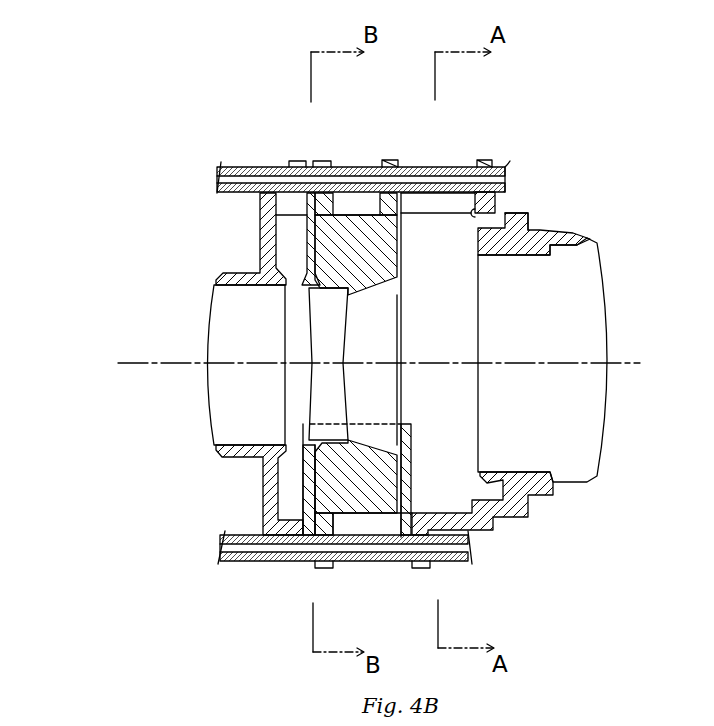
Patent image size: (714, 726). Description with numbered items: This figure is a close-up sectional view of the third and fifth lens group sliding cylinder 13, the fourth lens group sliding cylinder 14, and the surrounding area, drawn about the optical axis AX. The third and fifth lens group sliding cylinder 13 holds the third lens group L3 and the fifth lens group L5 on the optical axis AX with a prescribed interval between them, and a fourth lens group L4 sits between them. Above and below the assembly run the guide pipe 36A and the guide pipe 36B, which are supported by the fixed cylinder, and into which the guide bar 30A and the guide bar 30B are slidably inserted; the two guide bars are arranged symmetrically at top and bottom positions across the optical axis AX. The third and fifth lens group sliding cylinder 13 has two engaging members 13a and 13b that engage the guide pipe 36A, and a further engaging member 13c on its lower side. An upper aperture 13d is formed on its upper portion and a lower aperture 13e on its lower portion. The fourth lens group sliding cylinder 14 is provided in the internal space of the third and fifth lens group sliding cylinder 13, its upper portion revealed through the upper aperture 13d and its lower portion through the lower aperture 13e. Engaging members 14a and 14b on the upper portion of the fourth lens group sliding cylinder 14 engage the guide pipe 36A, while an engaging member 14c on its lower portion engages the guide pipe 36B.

The third and fifth lens group sliding cylinder 13 is at (539, 225).
The engaging member 13a is at (292, 160).
The engaging member 13b is at (488, 160).
The screw 13c is at (427, 568).
The upper aperture 13d is at (494, 212).
The lower aperture 13e is at (402, 483).
The fourth lens group sliding cylinder 14 is at (308, 250).
The engaging member 14a is at (326, 160).
The engaging member 14b is at (392, 160).
The engaging member 14c is at (325, 568).
The guide bar 30A is at (460, 184).
The guide bar 30B is at (377, 546).
The guide pipe 36A is at (239, 166).
The guide pipe 36B is at (268, 562).
The third lens group L3 is at (211, 325).
The fourth lens L4 is at (350, 332).
The fifth lens group L5 is at (607, 314).
The optical axis AX is at (640, 363).